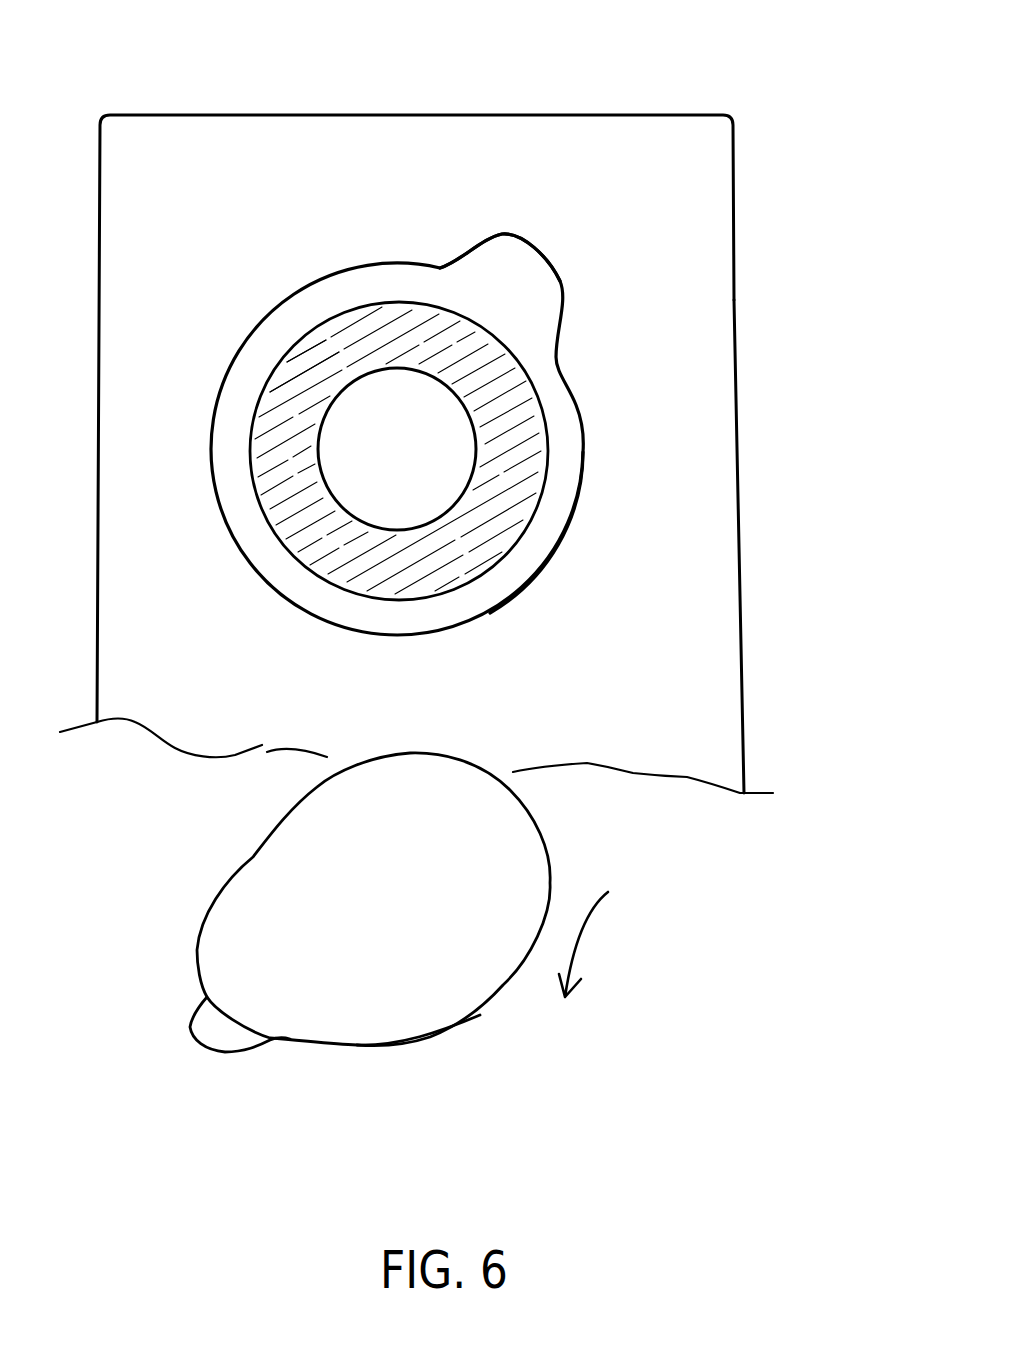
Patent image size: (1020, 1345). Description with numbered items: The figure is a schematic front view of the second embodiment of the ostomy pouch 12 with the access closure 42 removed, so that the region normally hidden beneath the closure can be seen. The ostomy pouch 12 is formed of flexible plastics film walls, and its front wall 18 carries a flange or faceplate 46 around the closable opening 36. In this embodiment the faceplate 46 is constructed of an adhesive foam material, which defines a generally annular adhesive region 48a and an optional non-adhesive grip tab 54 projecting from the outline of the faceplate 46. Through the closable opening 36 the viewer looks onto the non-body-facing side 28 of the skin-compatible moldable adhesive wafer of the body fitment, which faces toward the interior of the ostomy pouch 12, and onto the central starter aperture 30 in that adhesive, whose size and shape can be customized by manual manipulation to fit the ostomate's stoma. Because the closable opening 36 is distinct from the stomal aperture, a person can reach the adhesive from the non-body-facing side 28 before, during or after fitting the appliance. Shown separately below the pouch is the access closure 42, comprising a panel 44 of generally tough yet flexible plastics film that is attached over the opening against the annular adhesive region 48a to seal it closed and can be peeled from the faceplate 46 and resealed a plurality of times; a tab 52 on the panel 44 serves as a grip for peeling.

The ostomy pouch 12 is at (577, 94).
The front wall 18 is at (707, 433).
The non-body-facing side 28 is at (416, 575).
The central starter aperture 30 is at (375, 488).
The closable opening 36 is at (283, 323).
The access closure 42 is at (437, 1042).
The panel 44 is at (503, 837).
The faceplate 46 is at (568, 365).
The annular adhesive region 48a is at (558, 496).
The pull tab 52 is at (233, 1043).
The grip tab 54 is at (537, 257).